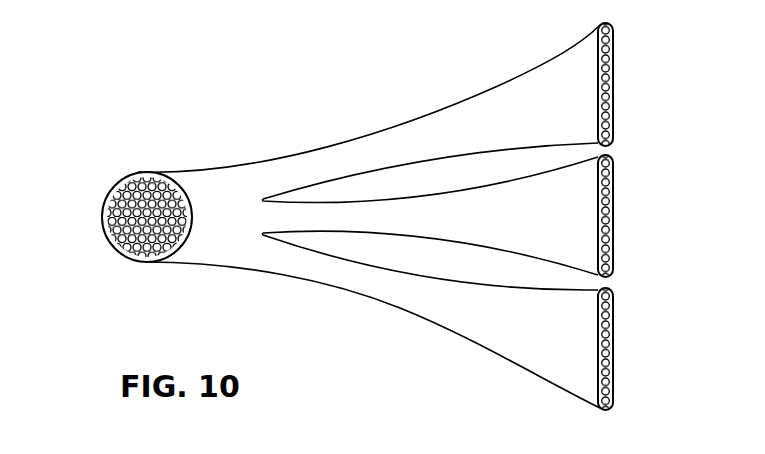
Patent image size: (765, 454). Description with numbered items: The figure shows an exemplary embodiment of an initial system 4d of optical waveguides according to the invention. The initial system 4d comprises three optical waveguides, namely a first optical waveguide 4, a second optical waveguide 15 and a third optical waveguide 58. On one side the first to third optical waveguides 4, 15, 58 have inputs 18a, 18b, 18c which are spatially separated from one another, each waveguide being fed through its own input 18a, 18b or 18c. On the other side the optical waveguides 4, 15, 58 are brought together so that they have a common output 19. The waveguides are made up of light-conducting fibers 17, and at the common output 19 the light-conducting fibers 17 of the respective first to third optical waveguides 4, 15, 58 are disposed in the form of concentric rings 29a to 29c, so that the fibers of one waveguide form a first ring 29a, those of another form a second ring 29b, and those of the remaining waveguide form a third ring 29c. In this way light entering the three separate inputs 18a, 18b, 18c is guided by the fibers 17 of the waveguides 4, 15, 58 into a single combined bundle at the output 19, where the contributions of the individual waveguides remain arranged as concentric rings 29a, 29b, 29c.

The first optical waveguide 4 is at (613, 84).
The initial system of optical waveguides 4d is at (153, 158).
The second optical waveguide 15 is at (613, 218).
The light-conducting fibers 17 is at (118, 176).
The input of first optical waveguide 18a is at (502, 100).
The input of second optical waveguide 18b is at (422, 203).
The input of third optical waveguide 18c is at (495, 332).
The common output 19 is at (197, 193).
The first concentric ring 29a is at (104, 215).
The second concentric ring 29b is at (105, 232).
The third concentric ring 29c is at (125, 253).
The third optical waveguide 58 is at (613, 350).